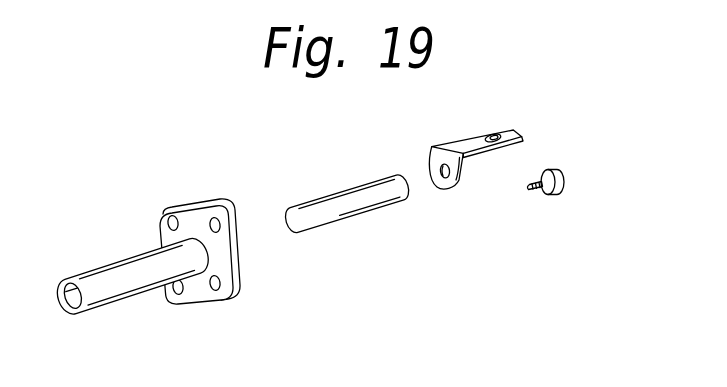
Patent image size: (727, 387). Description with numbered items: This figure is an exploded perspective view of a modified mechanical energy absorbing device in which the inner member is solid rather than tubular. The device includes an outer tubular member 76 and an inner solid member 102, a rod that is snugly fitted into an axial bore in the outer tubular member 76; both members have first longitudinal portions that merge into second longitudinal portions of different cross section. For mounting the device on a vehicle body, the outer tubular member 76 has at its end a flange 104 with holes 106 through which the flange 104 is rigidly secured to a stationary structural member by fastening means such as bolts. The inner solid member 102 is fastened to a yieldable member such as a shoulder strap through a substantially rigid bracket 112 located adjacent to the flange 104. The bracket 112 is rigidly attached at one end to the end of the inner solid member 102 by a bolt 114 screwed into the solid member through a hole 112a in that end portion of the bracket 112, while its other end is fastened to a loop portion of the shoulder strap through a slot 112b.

The outer tubular member 76 is at (116, 262).
The inner solid member 102 is at (353, 206).
The flange 104 is at (237, 261).
The holes 106 is at (219, 289).
The bracket 112 is at (482, 157).
The hole 112a is at (450, 188).
The slot 112b is at (503, 135).
The bolt 114 is at (562, 180).